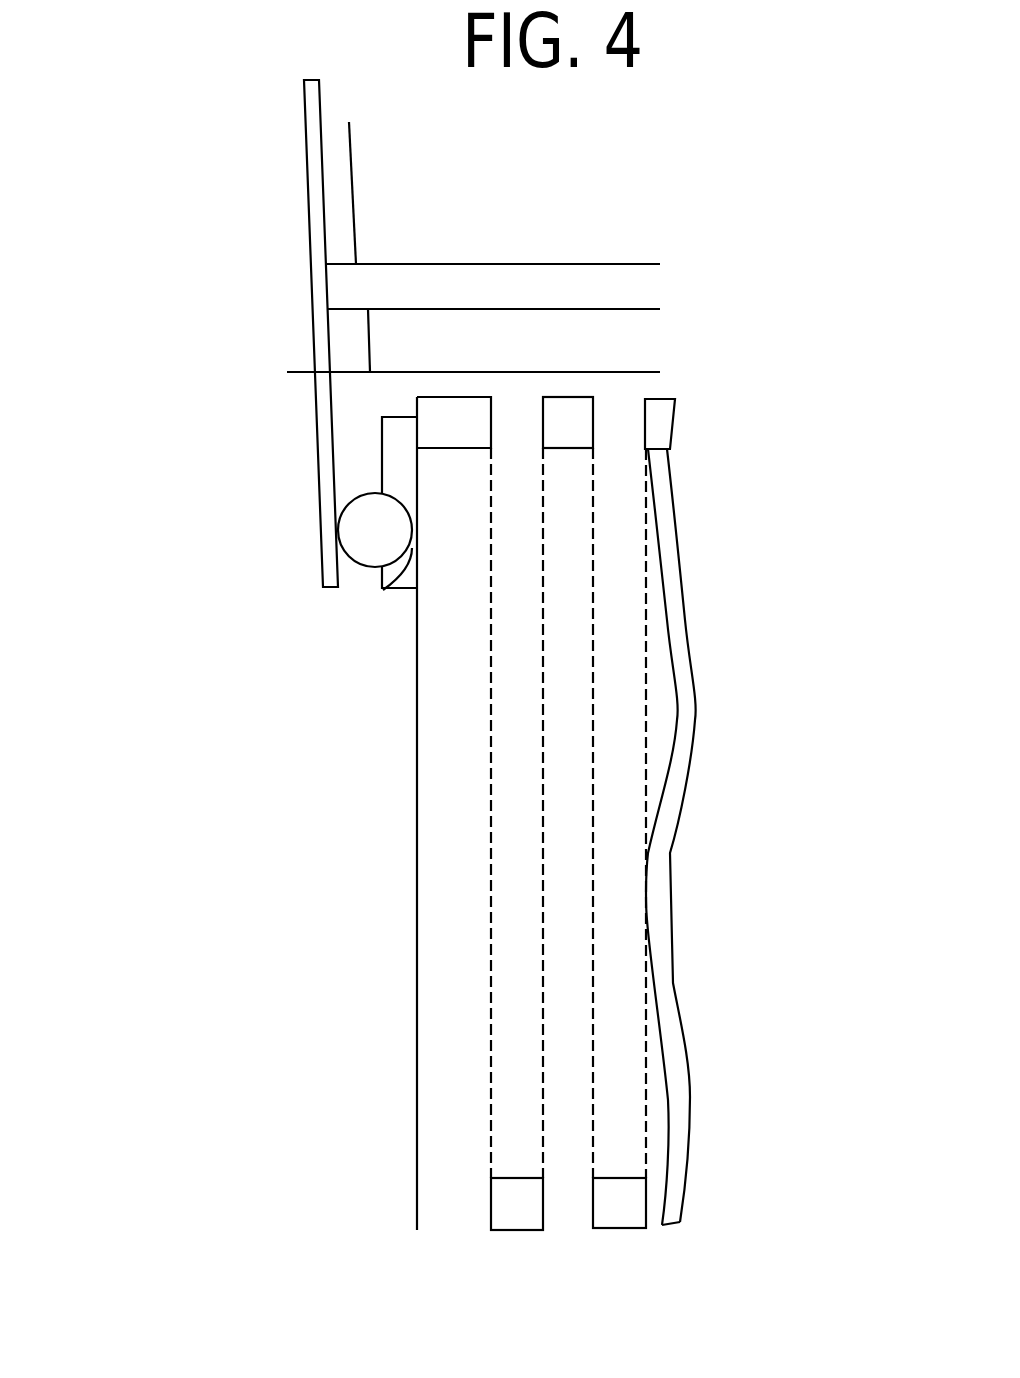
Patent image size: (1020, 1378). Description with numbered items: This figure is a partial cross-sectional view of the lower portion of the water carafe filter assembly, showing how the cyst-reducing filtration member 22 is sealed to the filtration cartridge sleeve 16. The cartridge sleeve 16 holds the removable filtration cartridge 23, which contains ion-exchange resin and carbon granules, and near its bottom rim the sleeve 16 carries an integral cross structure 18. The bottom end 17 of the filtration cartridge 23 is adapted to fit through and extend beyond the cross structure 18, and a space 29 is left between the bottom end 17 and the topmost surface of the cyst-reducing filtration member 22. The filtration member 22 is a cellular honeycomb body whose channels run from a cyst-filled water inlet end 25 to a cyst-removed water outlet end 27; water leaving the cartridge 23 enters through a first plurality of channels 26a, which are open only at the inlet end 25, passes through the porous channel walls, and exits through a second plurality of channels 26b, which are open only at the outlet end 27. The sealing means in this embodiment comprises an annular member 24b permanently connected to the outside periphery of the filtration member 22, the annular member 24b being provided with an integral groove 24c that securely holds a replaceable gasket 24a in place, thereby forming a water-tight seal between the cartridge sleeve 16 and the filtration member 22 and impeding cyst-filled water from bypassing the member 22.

The filtration cartridge sleeve 16 is at (308, 152).
The bottom end 17 is at (290, 372).
The integral cross structure 18 is at (378, 286).
The cyst-reducing filtration member 22 is at (339, 880).
The filtration cartridge 23 is at (547, 185).
The gasket 24a is at (373, 537).
The annular member 24b is at (390, 452).
The integral groove 24c is at (383, 590).
The cyst-filled water inlet end 25 is at (618, 412).
The first plurality of channels 26a is at (627, 633).
The second plurality of channels 26b is at (565, 1063).
The cyst-removed water outlet end 27 is at (462, 1225).
The space 29 is at (638, 387).